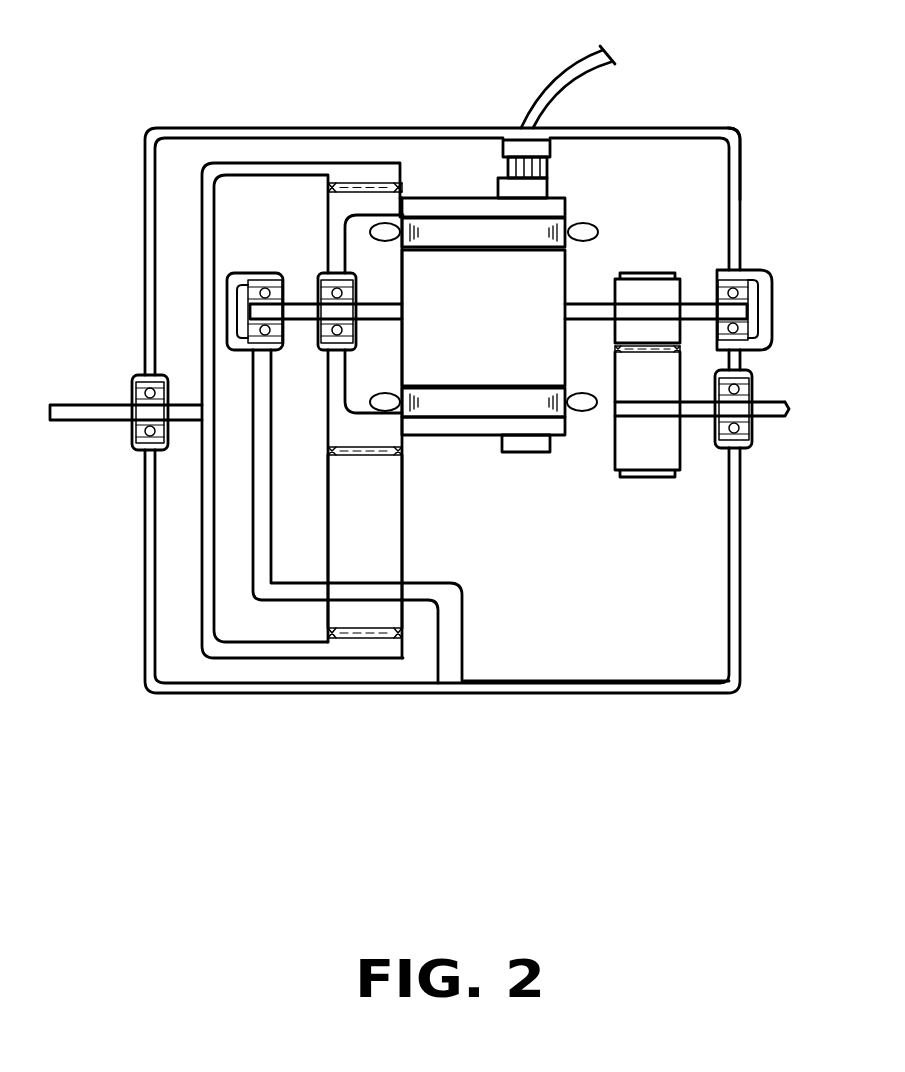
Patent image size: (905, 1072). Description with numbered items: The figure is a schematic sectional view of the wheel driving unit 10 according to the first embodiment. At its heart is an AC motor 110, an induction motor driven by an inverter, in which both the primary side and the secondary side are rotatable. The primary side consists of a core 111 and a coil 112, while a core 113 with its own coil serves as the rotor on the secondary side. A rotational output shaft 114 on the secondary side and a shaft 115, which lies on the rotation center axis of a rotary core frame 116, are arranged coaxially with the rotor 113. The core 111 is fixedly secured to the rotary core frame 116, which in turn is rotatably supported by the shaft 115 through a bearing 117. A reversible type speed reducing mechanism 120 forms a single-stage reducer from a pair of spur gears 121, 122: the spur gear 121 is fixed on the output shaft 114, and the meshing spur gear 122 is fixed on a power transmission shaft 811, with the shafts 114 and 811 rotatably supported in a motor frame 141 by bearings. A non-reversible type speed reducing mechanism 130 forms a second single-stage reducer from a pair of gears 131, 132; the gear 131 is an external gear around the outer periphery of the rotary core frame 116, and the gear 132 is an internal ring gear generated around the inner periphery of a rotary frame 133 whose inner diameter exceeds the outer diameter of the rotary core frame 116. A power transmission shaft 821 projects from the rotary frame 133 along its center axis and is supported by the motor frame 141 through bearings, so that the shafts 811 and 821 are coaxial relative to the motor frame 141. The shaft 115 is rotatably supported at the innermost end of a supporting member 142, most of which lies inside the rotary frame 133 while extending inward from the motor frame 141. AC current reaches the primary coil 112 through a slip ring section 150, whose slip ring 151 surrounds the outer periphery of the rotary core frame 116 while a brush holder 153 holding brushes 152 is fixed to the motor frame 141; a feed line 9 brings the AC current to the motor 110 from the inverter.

The feed line 9 is at (576, 66).
The wheel driving unit 10 is at (522, 698).
The AC motor 110 is at (519, 309).
The core on the primary side 111 is at (463, 228).
The coil on the primary side 112 is at (586, 228).
The core on the secondary side 113 is at (558, 284).
The rotational output shaft 114 is at (743, 308).
The shaft 115 is at (290, 302).
The rotary core frame 116 is at (423, 200).
The bearing 117 is at (300, 304).
The reversible type speed reducing mechanism 120 is at (690, 360).
The spur gear 121 is at (668, 293).
The spur gear 122 is at (677, 455).
The non-reversible type speed reducing mechanism 130 is at (411, 541).
The gear 131 is at (396, 456).
The gear 132 is at (375, 639).
The rotary frame 133 is at (244, 165).
The motor frame 141 is at (713, 130).
The supporting member 142 is at (262, 510).
The slip ring section 150 is at (560, 167).
The slip ring 151 is at (550, 443).
The brushes 152 is at (498, 183).
The brush holder 153 is at (510, 153).
The power transmission shaft 811 is at (770, 412).
The power transmission shaft 821 is at (80, 410).